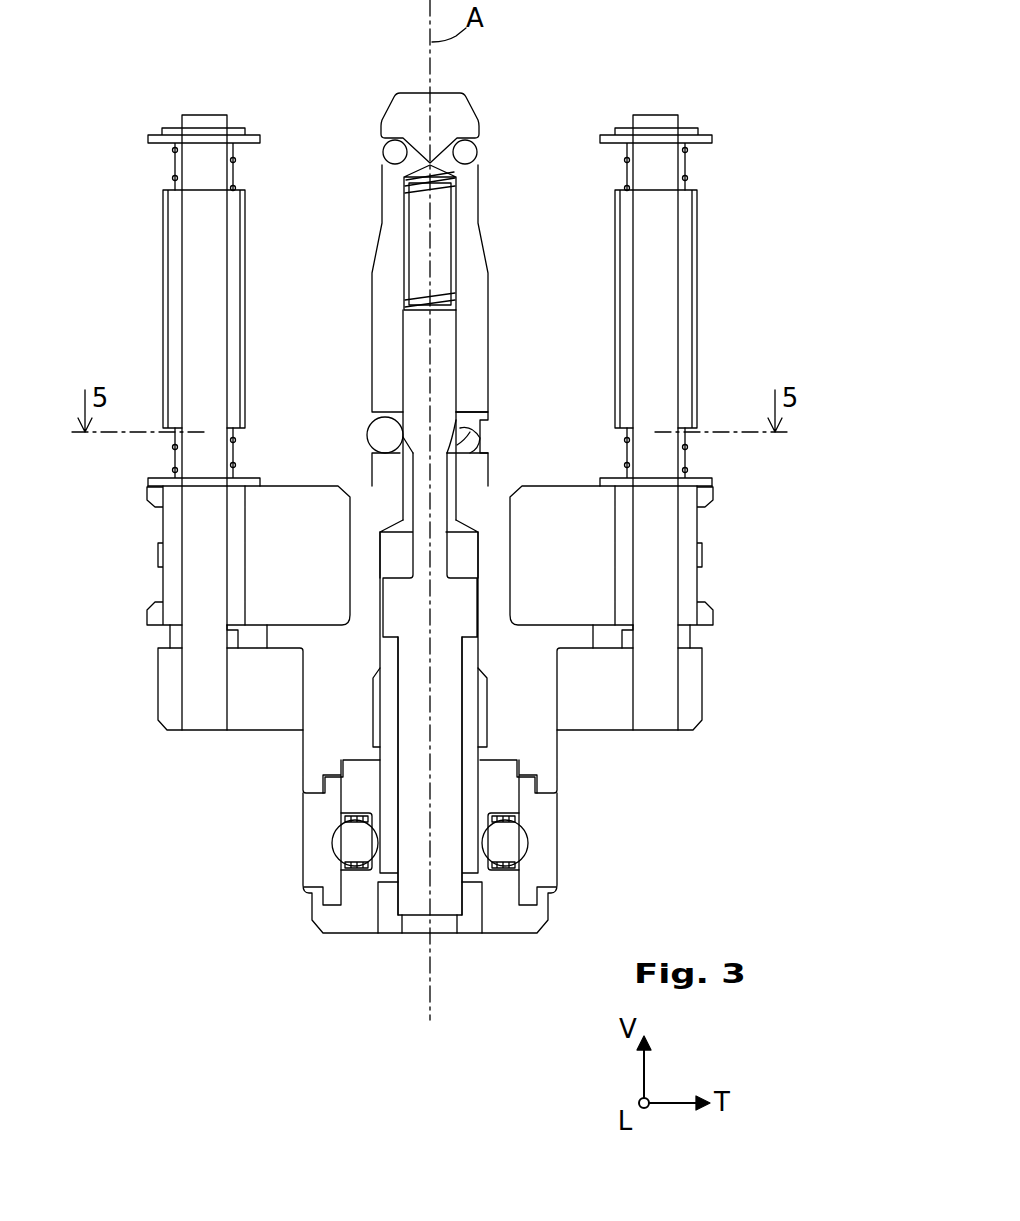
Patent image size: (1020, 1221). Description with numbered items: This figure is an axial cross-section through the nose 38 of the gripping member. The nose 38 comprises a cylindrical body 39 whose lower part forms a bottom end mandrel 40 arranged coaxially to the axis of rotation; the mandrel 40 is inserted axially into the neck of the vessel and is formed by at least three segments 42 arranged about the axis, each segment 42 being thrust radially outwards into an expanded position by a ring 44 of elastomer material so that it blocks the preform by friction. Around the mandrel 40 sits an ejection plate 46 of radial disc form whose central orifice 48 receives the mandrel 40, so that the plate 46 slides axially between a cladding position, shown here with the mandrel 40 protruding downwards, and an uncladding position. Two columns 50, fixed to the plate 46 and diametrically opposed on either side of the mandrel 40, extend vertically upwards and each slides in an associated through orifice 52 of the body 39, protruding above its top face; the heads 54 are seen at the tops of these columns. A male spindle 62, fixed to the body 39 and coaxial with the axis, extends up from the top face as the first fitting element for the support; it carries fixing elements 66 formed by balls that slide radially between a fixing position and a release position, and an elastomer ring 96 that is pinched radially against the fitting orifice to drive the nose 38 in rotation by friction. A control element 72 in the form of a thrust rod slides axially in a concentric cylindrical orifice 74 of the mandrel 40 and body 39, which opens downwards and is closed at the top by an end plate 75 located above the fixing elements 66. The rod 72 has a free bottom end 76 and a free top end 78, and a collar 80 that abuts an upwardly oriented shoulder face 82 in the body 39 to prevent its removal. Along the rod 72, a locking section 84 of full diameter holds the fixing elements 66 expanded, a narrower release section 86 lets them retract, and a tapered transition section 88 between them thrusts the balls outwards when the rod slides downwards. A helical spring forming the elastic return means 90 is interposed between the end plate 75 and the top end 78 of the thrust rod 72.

The nose 38 is at (591, 108).
The cylindrical body 39 is at (255, 553).
The bottom end mandrel 40 is at (559, 827).
The segments 42 is at (320, 838).
The ring 44 is at (355, 845).
The ejection plate 46 is at (237, 700).
The central orifice 48 is at (302, 710).
The columns 50 is at (200, 270).
The through orifice 52 is at (192, 525).
The pin head 54 is at (175, 176).
The male spindle 62 is at (386, 276).
The fixing elements 66 is at (383, 435).
The control element 72 is at (440, 768).
The axial cylindrical orifice 74 is at (395, 556).
The top end plate 75 is at (437, 237).
The free bottom first end 76 is at (438, 925).
The free top second end 78 is at (432, 310).
The collar 80 is at (405, 605).
The shoulder face 82 is at (470, 655).
The locking section 84 is at (430, 418).
The release section 86 is at (440, 495).
The transition section 88 is at (452, 437).
The elastic return means 90 is at (410, 185).
The ring 96 is at (468, 155).